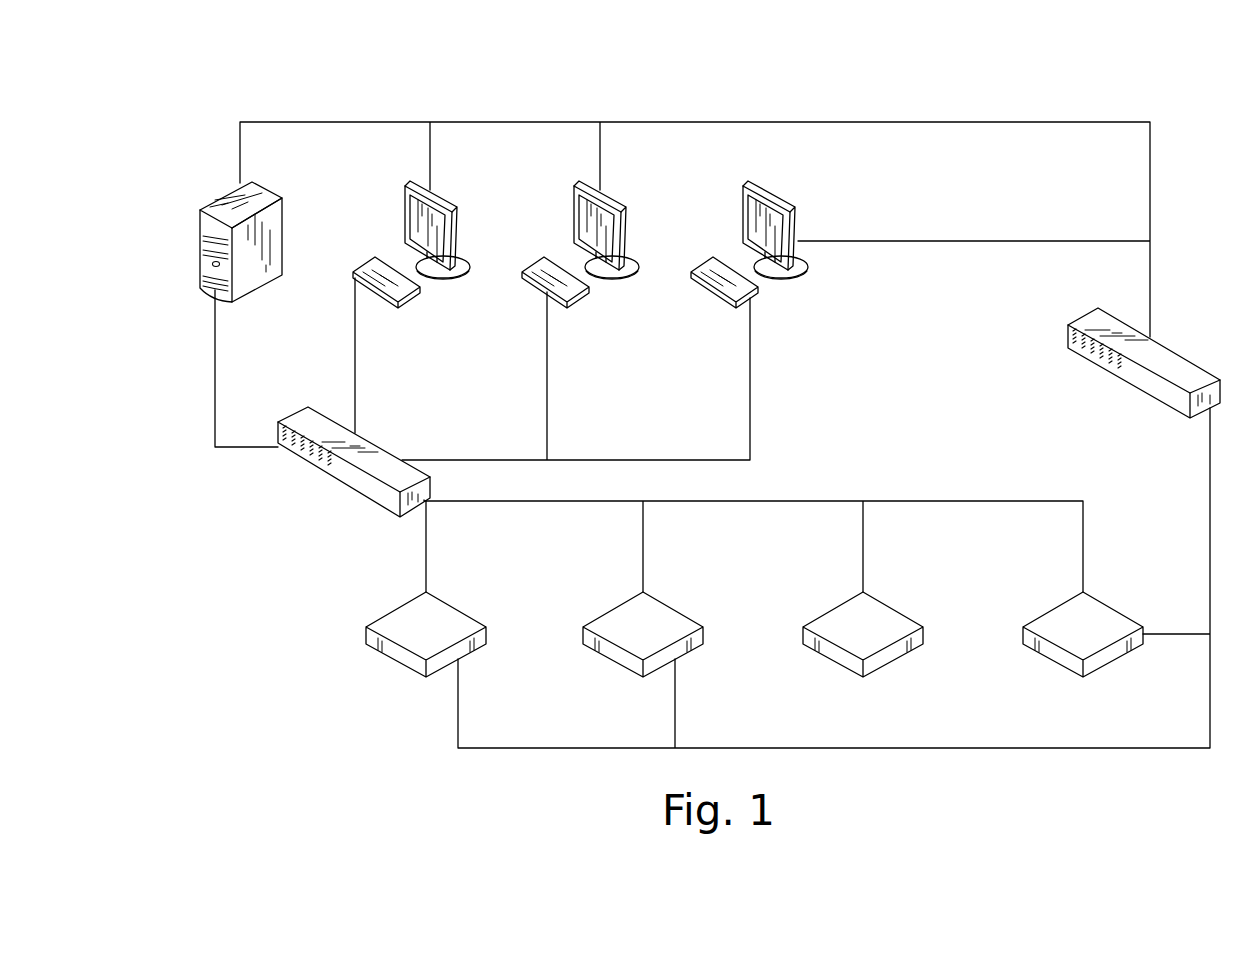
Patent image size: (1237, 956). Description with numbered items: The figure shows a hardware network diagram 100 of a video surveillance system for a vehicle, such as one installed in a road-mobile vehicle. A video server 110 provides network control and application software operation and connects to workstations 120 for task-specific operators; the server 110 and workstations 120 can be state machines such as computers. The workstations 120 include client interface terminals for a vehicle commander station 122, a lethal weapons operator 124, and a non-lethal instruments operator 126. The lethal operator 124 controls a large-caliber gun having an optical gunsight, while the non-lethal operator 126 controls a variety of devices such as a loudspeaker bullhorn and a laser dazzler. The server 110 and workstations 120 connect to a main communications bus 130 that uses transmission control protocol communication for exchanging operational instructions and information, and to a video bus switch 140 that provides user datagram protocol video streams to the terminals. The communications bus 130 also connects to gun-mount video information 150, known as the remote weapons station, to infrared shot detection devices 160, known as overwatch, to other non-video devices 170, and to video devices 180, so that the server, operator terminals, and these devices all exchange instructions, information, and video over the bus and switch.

The hardware network diagram 100 is at (710, 387).
The video server 110 is at (256, 290).
The workstations 120 is at (815, 113).
The vehicle commander station 122 is at (462, 279).
The lethal weapons operator 124 is at (601, 260).
The non-lethal instruments operator 126 is at (776, 260).
The main communications bus 130 is at (373, 443).
The video bus switch 140 is at (1082, 315).
The gun-mount video information 150 is at (449, 633).
The infrared shot detection devices 160 is at (666, 633).
The other non-video devices 170 is at (886, 633).
The video devices 180 is at (1106, 633).